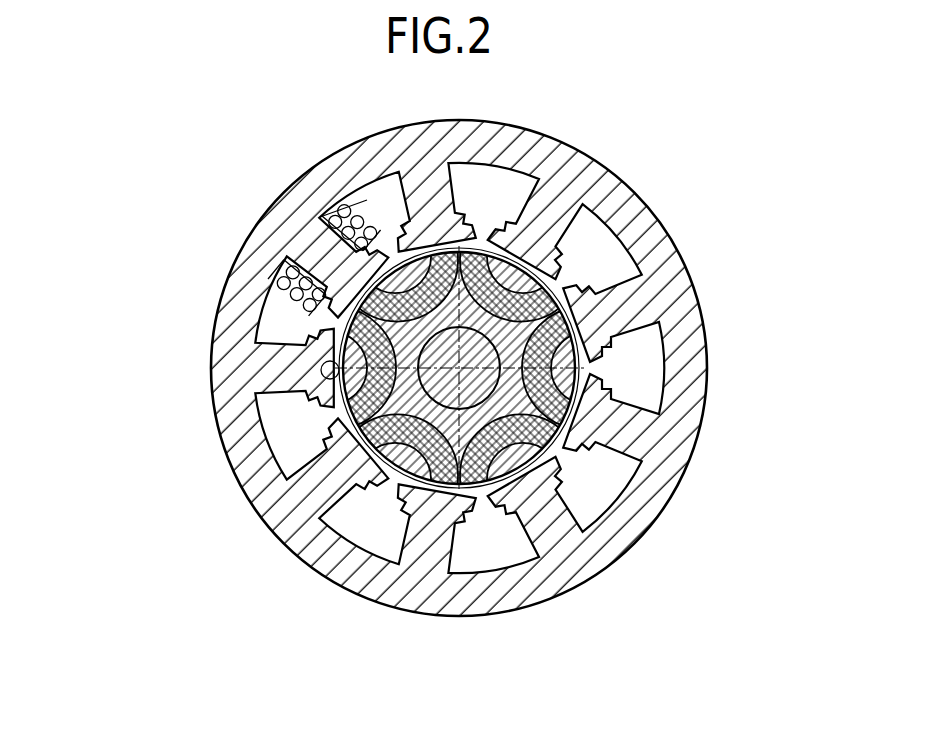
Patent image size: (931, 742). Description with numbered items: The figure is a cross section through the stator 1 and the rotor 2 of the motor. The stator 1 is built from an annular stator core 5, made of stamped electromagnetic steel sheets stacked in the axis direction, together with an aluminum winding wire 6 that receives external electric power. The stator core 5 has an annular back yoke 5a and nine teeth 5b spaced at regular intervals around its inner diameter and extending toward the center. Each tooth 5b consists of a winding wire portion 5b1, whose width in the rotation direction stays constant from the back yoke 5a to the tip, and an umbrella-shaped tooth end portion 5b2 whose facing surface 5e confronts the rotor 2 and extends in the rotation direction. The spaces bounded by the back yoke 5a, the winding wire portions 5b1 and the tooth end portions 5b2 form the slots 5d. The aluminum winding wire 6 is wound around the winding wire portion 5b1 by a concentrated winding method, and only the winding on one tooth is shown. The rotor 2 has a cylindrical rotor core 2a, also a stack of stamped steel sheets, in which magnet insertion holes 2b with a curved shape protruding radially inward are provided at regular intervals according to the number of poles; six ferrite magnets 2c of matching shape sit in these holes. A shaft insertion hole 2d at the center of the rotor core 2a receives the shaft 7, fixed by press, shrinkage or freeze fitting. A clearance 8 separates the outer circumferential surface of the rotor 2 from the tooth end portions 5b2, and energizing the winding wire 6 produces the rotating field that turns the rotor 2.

The stator 1 is at (388, 368).
The rotor 2 is at (465, 371).
The rotor core 2a is at (577, 362).
The magnet insertion hole 2b is at (577, 383).
The ferrite magnet 2c is at (577, 400).
The shaft insertion hole 2d is at (577, 417).
The stator core 5 is at (244, 305).
The back yoke 5a is at (315, 222).
The tooth 5b is at (312, 243).
The winding wire portion 5b1 is at (288, 281).
The tooth end portion 5b2 is at (325, 305).
The slot 5d is at (290, 330).
The facing surface 5e is at (241, 385).
The aluminum winding wire 6 is at (327, 208).
The shaft 7 is at (519, 443).
The clearance 8 is at (373, 462).